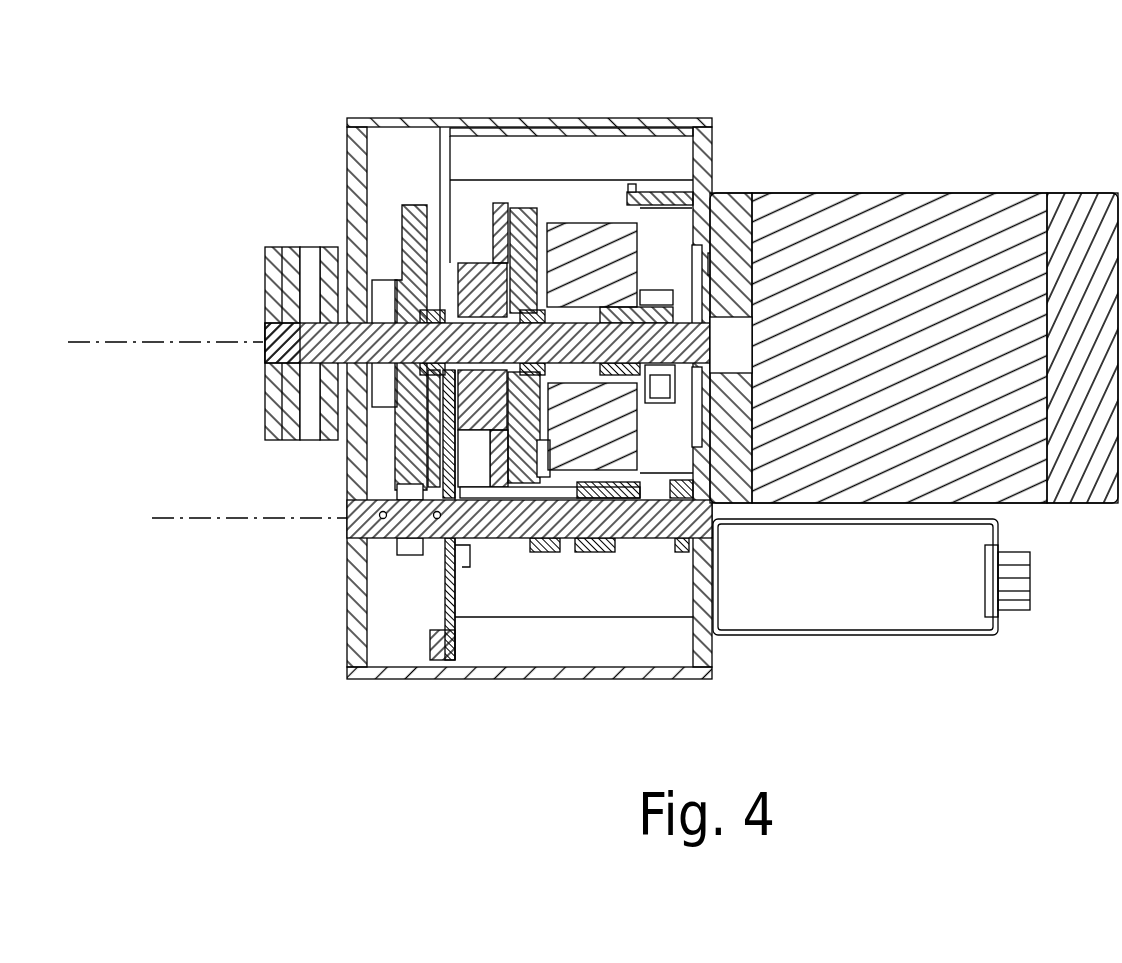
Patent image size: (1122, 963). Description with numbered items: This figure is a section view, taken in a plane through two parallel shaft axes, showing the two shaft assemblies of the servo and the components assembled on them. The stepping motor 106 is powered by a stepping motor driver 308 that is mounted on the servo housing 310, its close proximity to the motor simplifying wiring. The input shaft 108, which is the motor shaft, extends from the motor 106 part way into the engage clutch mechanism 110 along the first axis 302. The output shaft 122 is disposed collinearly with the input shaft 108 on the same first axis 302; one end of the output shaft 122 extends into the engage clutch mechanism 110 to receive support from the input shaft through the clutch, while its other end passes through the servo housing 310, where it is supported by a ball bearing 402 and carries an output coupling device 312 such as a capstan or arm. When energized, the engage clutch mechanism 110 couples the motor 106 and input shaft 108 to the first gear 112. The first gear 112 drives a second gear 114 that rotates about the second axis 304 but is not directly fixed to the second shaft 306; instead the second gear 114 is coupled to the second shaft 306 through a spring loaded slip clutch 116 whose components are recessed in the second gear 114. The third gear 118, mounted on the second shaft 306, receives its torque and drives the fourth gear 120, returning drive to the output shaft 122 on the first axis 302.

The stepping motor 106 is at (945, 193).
The input shaft 108 is at (686, 327).
The engage clutch mechanism 110 is at (590, 213).
The first gear 112 is at (437, 120).
The second gear 114 is at (457, 640).
The spring loaded slip clutch 116 is at (462, 567).
The third gear 118 is at (405, 553).
The fourth gear 120 is at (411, 204).
The output shaft 122 is at (263, 332).
The first axis 302 is at (148, 342).
The second axis 304 is at (227, 518).
The second shaft 306 is at (347, 527).
The stepping motor driver 308 is at (888, 636).
The servo housing 310 is at (712, 155).
The output coupling device 312 is at (265, 278).
The ball bearing 402 is at (352, 325).